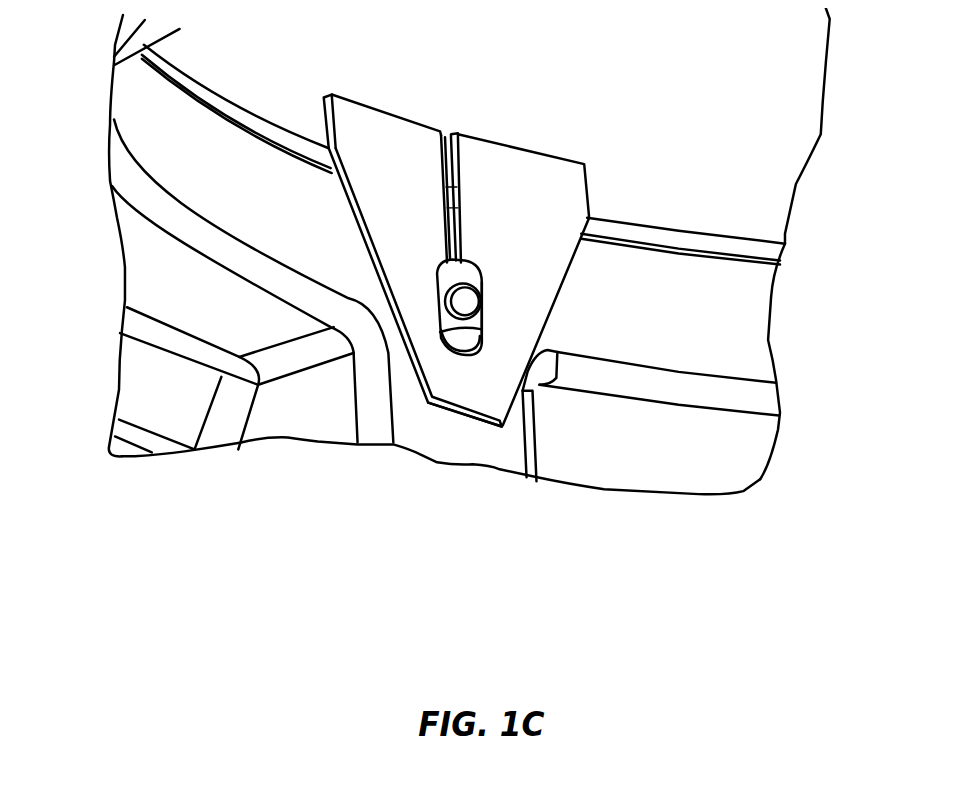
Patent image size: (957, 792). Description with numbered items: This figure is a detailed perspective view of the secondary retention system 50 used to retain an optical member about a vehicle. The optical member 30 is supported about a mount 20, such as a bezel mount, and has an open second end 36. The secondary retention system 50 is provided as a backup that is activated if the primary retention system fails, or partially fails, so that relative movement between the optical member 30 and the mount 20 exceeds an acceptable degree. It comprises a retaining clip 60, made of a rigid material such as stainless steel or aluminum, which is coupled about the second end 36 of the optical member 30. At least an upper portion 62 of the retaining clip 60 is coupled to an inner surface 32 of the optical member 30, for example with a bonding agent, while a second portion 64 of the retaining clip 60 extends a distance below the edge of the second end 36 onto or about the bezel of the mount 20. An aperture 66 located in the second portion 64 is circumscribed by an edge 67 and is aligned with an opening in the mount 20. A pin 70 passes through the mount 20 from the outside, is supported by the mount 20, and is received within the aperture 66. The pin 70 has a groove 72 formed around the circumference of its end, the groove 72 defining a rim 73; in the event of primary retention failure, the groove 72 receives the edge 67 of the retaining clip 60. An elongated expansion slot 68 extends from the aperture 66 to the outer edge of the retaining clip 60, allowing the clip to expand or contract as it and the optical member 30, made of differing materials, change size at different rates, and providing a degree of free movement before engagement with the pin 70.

The mount 20 is at (162, 121).
The optical member 30 is at (750, 153).
The inner surface 32 is at (263, 72).
The second end 36 is at (747, 218).
The secondary retention system 50 is at (460, 434).
The retaining clip 60 is at (593, 179).
The upper portion 62 is at (527, 177).
The second portion 64 is at (432, 352).
The aperture 66 is at (450, 270).
The elongated expansion slot 68 is at (455, 163).
The pin 70 is at (470, 301).
The groove 72 is at (443, 333).
The rim 73 is at (443, 293).
The edge 67 is at (480, 347).